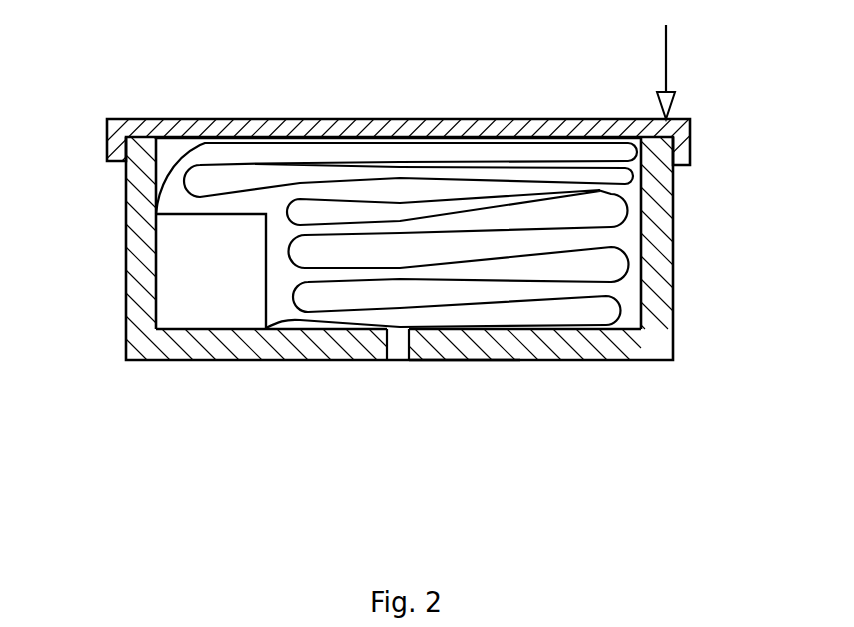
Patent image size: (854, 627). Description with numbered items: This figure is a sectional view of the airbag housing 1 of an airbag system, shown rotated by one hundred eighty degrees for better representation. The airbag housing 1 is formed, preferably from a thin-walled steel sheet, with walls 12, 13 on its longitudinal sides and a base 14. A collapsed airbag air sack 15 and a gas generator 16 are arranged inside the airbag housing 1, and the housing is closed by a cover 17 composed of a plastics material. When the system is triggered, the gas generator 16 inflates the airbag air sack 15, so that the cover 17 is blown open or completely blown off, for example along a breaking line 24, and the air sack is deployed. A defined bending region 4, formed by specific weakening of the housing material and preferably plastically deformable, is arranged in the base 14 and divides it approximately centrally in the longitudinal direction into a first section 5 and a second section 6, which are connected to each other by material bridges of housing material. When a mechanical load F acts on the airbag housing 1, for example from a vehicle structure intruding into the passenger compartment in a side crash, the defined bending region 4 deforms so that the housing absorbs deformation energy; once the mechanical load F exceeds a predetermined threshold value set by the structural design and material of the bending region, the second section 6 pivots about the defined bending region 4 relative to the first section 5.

The airbag housing 1 is at (673, 253).
The defined bending region 4 is at (396, 347).
The first airbag housing section 5 is at (233, 343).
The second airbag housing section 6 is at (590, 347).
The wall 12 is at (139, 227).
The wall 13 is at (660, 307).
The base 14 is at (462, 361).
The airbag air sack 15 is at (518, 179).
The gas generator 16 is at (223, 288).
The cover 17 is at (173, 119).
The breaking line 24 is at (399, 132).
The mechanical load F is at (666, 73).